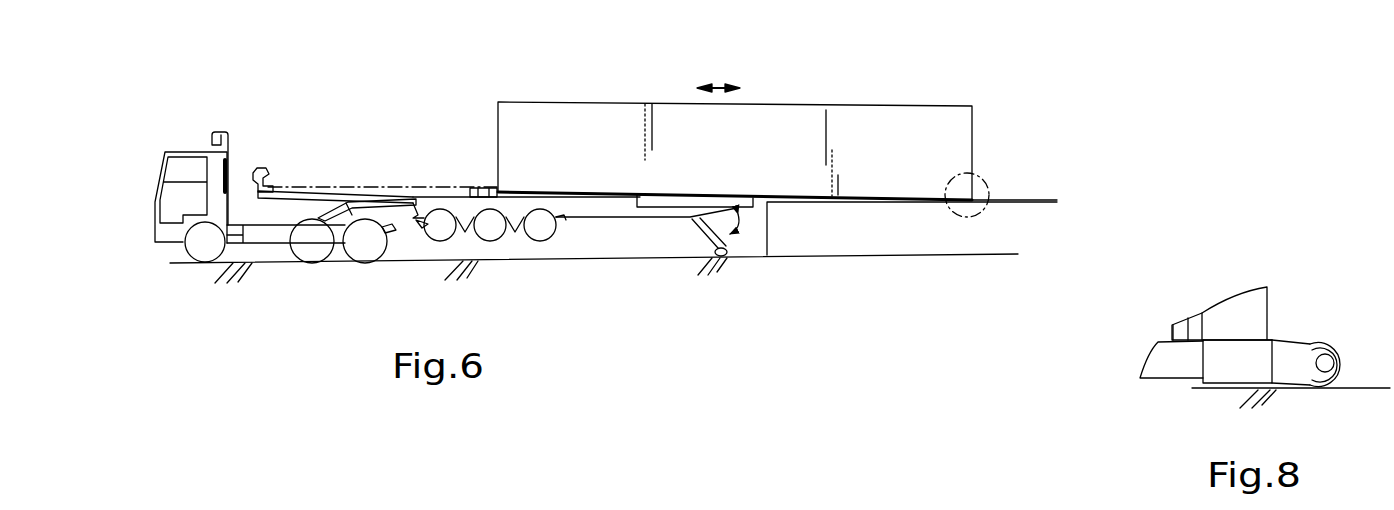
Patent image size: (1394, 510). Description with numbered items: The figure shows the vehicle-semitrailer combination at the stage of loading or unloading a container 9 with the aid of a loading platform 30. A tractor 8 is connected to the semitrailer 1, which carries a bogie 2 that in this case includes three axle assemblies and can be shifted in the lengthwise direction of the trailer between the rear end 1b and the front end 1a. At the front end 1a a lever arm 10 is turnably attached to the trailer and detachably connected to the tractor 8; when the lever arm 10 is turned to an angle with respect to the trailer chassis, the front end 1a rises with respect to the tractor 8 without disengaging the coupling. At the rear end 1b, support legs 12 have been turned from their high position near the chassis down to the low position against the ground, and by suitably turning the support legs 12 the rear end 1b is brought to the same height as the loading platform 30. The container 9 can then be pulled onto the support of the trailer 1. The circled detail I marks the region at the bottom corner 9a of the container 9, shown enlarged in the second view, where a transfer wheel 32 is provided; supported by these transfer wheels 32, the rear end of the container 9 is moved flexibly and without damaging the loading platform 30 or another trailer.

In FIG. 6, the semitrailer 1 is at (460, 167).
In FIG. 6, the front end of the trailer 1a is at (299, 156).
In FIG. 6, the rear end of the trailer 1b is at (1046, 179).
In FIG. 6, the bogie 2 is at (493, 237).
In FIG. 6, the tractor 8 is at (188, 151).
In FIG. 6, the container 9 is at (607, 120).
In FIG. 8, the bottom corners of the container 9a is at (1248, 352).
In FIG. 6, the lever arm 10 is at (346, 205).
In FIG. 6, the support legs 12 is at (697, 239).
In FIG. 6, the loading platform 30 is at (860, 238).
In FIG. 8, the transfer wheels 32 is at (1330, 346).
In FIG. 6, the detail I is at (982, 177).